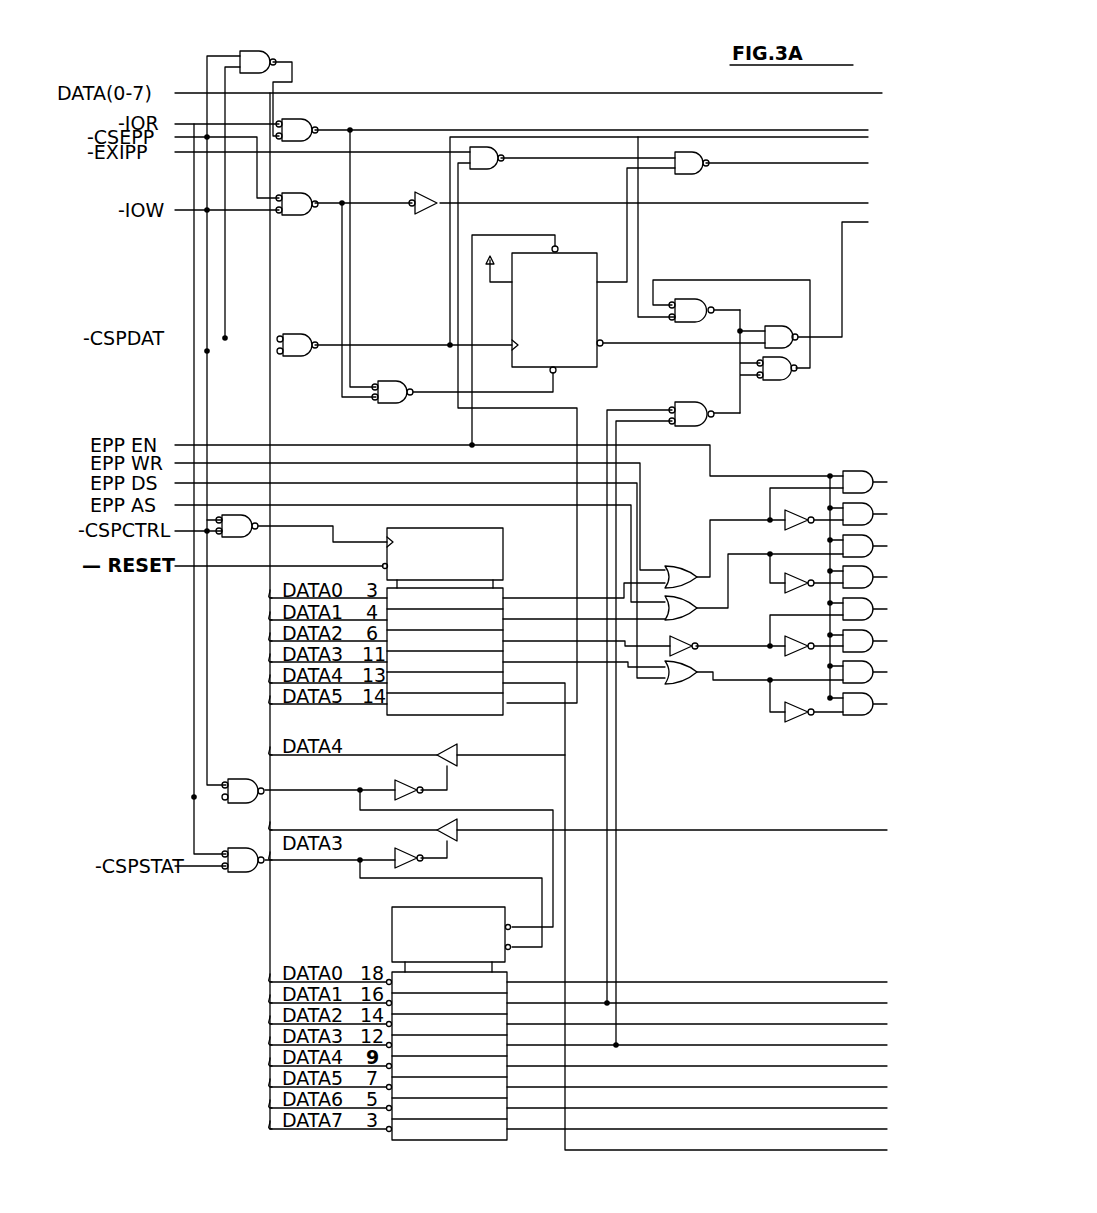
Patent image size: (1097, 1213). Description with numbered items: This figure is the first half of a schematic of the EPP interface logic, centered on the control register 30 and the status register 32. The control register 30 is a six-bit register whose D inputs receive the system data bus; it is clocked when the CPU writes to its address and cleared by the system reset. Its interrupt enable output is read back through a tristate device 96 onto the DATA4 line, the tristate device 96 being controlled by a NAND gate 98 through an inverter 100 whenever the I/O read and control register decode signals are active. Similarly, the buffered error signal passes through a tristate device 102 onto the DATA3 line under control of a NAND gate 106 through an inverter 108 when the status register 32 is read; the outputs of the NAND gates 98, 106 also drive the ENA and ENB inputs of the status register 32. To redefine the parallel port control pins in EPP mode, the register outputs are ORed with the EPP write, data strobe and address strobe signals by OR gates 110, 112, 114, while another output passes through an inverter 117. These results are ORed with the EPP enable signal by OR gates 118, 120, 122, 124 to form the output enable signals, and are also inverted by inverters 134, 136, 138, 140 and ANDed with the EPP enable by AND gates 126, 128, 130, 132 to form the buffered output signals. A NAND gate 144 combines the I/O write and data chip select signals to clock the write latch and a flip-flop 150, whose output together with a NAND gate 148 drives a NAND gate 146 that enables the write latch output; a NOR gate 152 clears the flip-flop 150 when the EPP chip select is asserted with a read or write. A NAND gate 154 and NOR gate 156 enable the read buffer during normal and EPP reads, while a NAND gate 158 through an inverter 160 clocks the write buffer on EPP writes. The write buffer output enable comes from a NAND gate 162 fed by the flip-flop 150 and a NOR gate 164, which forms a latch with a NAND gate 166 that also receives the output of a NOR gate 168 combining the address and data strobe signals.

The control register 30 is at (500, 540).
The status register 32 is at (432, 912).
The tristate device 96 is at (455, 750).
The NAND gate 98 is at (241, 779).
The inverter 100 is at (399, 786).
The tristate device 102 is at (458, 826).
The NAND gate 106 is at (240, 874).
The inverter 108 is at (422, 860).
The OR gate 110 is at (679, 566).
The OR gate 112 is at (690, 600).
The OR gate 114 is at (676, 687).
The inverter 117 is at (688, 641).
The OR gate 118 is at (867, 475).
The OR gate 120 is at (870, 541).
The OR gate 122 is at (870, 604).
The OR gate 124 is at (870, 667).
The AND gate 126 is at (870, 509).
The AND gate 128 is at (870, 572).
The AND gate 130 is at (870, 636).
The AND gate 132 is at (870, 700).
The inverter 134 is at (784, 513).
The inverter 136 is at (790, 578).
The inverter 138 is at (790, 640).
The inverter 140 is at (790, 722).
The NAND gate 144 is at (298, 332).
The NAND gate 146 is at (690, 152).
The NAND gate 148 is at (477, 147).
The flip-flop 150 is at (598, 362).
The NOR gate 152 is at (404, 402).
The NAND gate 154 is at (298, 122).
The NOR gate 156 is at (257, 51).
The NAND gate 158 is at (297, 216).
The inverter 160 is at (425, 215).
The NAND gate 162 is at (775, 326).
The NOR gate 164 is at (690, 299).
The NAND gate 166 is at (765, 380).
The NOR gate 168 is at (685, 403).